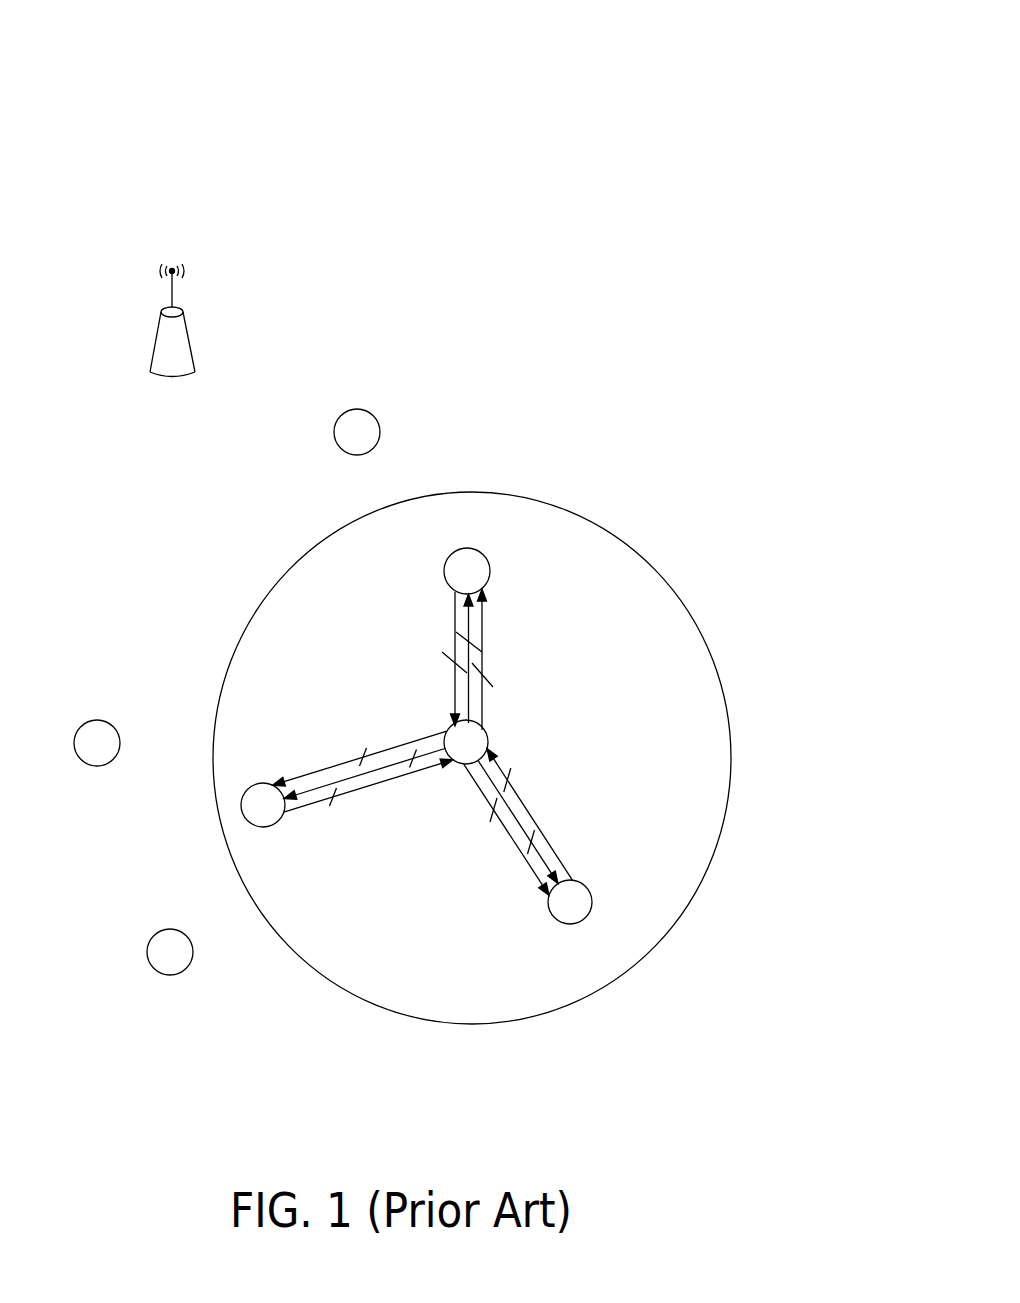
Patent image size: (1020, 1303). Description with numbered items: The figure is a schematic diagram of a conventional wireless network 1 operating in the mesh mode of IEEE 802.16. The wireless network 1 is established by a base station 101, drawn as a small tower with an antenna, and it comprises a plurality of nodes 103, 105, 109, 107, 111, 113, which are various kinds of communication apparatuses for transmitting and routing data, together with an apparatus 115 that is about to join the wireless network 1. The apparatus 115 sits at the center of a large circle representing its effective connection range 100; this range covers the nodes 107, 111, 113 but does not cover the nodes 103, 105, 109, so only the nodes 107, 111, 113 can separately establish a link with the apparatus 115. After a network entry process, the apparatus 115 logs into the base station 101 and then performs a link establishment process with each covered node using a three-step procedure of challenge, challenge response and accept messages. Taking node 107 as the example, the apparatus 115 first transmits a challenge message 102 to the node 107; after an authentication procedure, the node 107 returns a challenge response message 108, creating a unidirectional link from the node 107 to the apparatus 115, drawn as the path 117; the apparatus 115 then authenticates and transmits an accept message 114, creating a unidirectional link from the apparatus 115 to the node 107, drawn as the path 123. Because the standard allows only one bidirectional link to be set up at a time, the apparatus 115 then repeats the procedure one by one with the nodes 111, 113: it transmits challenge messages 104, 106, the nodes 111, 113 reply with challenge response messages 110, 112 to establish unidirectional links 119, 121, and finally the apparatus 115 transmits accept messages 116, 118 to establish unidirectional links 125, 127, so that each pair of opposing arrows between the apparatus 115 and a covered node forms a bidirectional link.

The wireless network 1 is at (381, 153).
The effective connection range 100 is at (626, 979).
The base station 101 is at (155, 333).
The challenge message 102 is at (470, 638).
The node 103 is at (95, 767).
The challenge message 104 is at (407, 747).
The node 105 is at (366, 413).
The challenge message 106 is at (528, 843).
The node 107 is at (489, 572).
The challenge response message 108 is at (455, 668).
The node 109 is at (155, 933).
The challenge response message 110 is at (337, 803).
The node 111 is at (270, 830).
The challenge response message 112 is at (510, 775).
The node 113 is at (593, 897).
The accept message 114 is at (482, 675).
The apparatus 115 is at (490, 737).
The accept message 116 is at (360, 752).
The path 117 is at (453, 618).
The accept message 118 is at (480, 808).
The unidirectional link 119 is at (382, 787).
The unidirectional link 121 is at (555, 843).
The path 123 is at (483, 705).
The unidirectional link 125 is at (310, 770).
The unidirectional link 127 is at (522, 863).